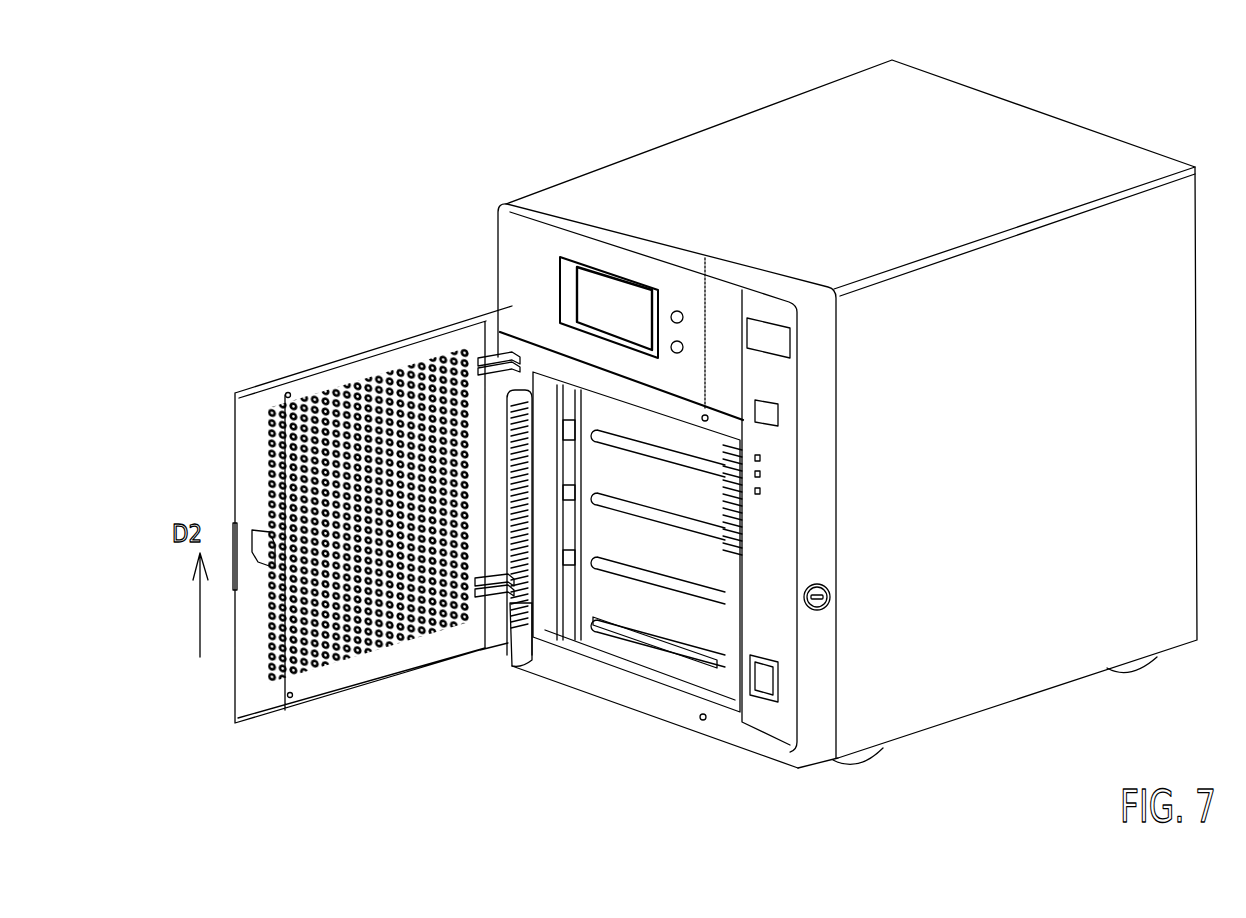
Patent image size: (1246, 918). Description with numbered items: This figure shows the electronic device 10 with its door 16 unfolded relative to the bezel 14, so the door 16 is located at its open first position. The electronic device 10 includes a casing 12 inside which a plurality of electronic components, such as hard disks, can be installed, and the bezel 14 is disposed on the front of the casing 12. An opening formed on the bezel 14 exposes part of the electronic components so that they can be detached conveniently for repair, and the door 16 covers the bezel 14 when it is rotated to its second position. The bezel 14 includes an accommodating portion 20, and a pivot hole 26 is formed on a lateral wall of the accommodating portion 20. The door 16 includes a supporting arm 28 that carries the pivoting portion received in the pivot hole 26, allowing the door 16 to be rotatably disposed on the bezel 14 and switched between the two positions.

The electronic device 10 is at (352, 138).
The casing 12 is at (688, 168).
The bezel 14 is at (520, 197).
The door 16 is at (335, 388).
The accommodating portion 20 is at (523, 630).
The pivot hole 26 is at (522, 362).
The supporting arm 28 is at (493, 362).